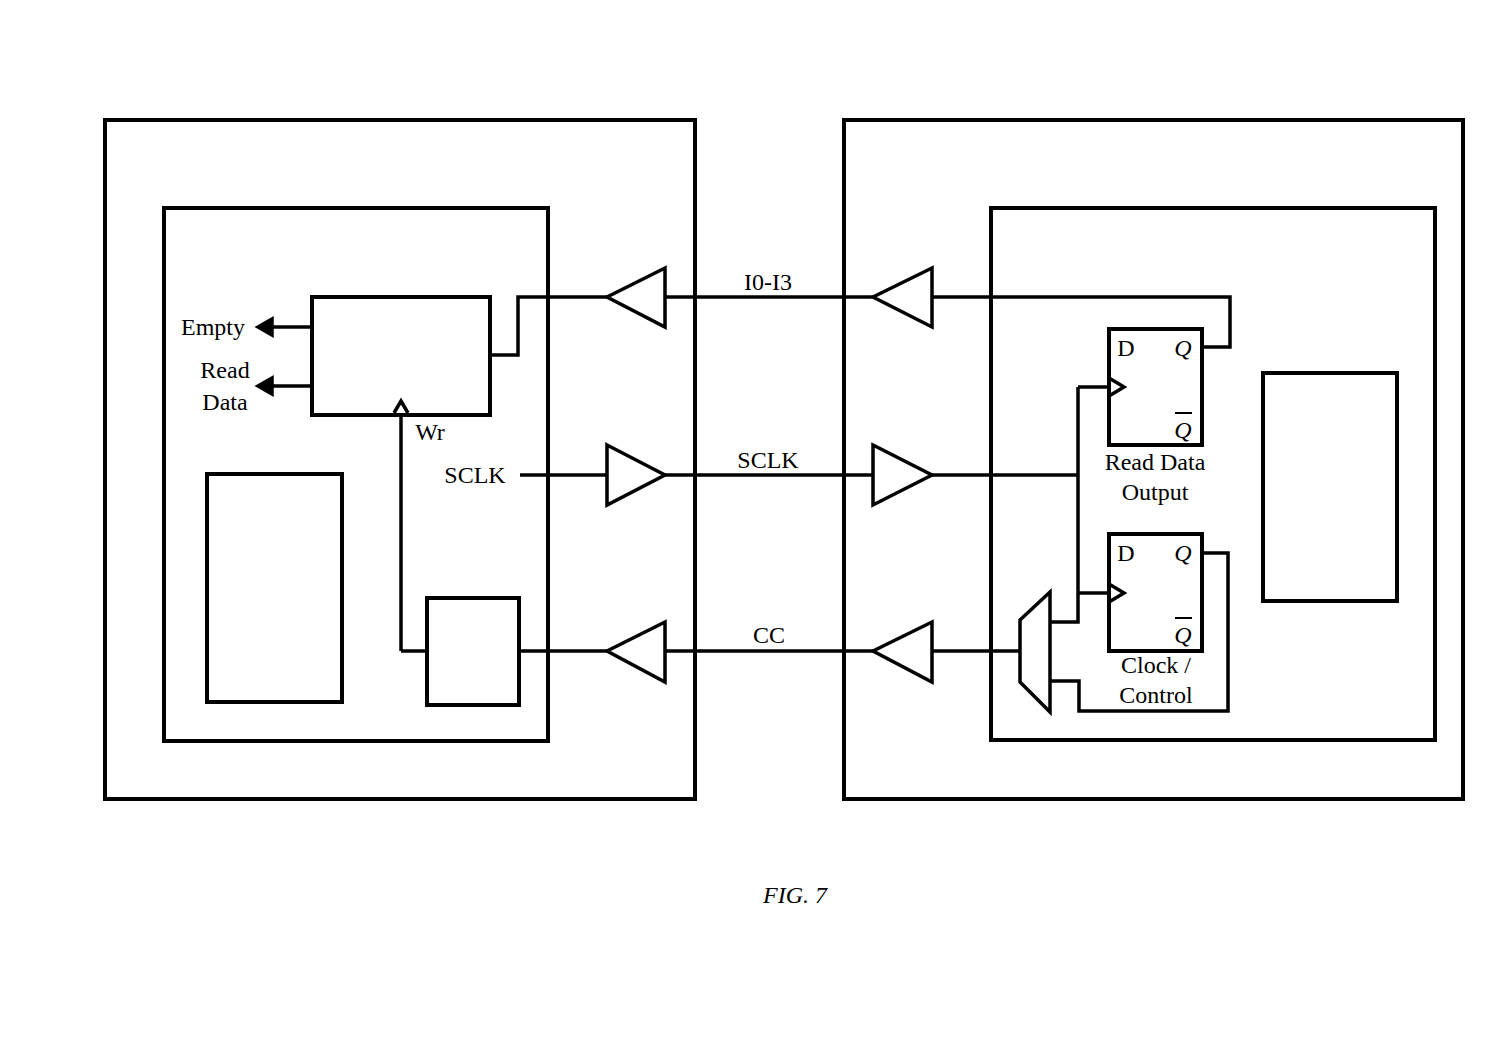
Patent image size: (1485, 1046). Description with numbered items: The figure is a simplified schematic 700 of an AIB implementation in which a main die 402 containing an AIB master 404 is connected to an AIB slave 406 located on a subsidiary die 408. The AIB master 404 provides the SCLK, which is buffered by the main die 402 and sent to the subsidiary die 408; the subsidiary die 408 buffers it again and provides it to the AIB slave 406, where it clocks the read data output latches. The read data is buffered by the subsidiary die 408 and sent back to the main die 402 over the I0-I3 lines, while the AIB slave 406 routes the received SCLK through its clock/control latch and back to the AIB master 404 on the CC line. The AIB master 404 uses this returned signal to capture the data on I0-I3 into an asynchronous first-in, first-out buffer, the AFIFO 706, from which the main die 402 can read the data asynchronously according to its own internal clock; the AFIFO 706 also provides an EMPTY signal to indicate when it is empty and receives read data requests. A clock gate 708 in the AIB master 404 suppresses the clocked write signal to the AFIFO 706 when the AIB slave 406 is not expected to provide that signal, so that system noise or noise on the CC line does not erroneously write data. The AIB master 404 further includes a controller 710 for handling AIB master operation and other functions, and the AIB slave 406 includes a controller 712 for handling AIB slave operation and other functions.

The simplified schematic 700 is at (340, 50).
The main die 402 is at (400, 459).
The AIB master 404 is at (356, 474).
The AIB slave 406 is at (1213, 474).
The subsidiary die 408 is at (1153, 459).
The asynchronous first-in, first-out buffer (AFIFO) 706 is at (401, 356).
The clock gate 708 is at (473, 651).
The controller 710 is at (274, 588).
The controller 712 is at (1330, 487).